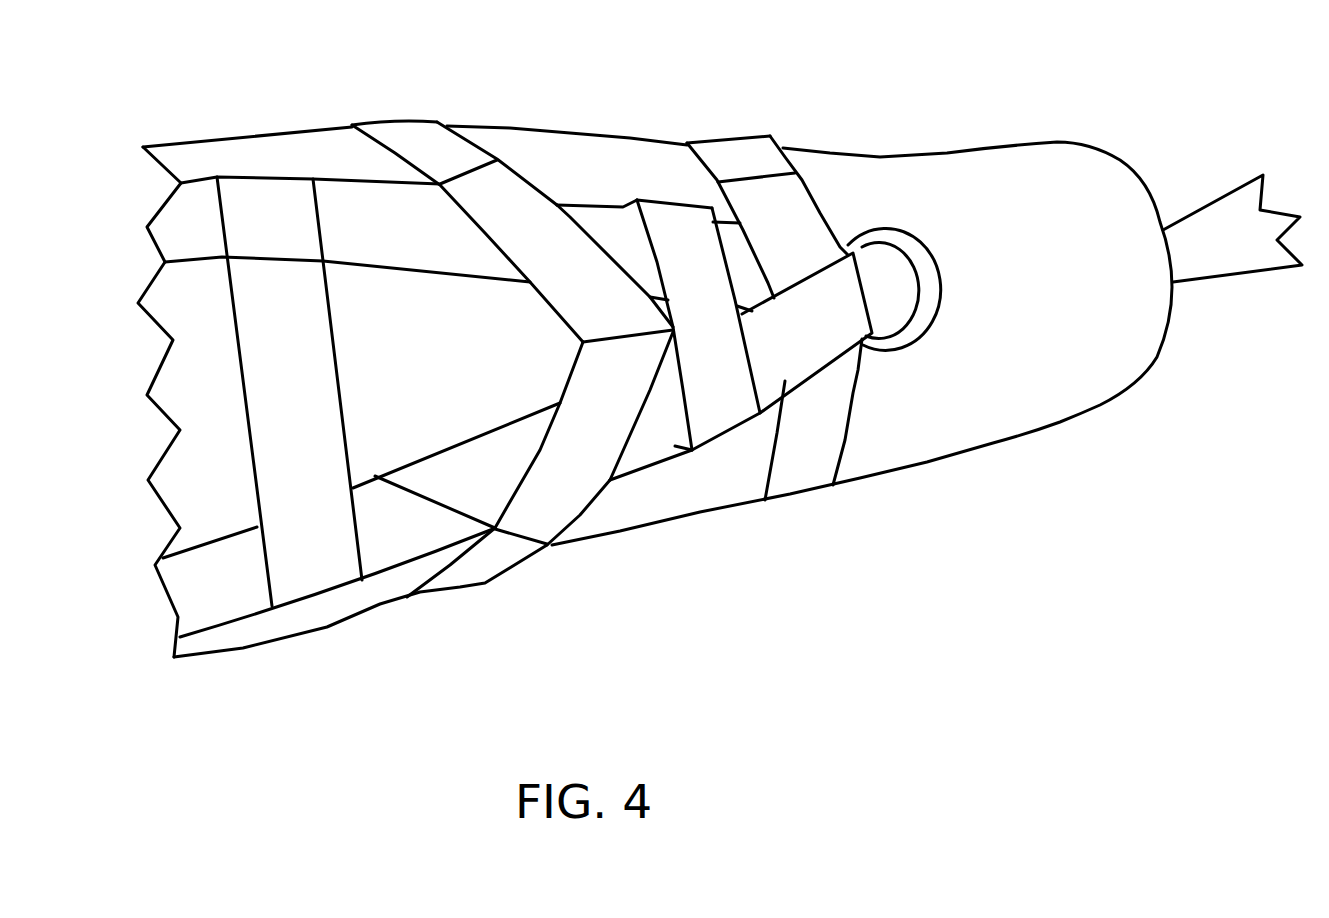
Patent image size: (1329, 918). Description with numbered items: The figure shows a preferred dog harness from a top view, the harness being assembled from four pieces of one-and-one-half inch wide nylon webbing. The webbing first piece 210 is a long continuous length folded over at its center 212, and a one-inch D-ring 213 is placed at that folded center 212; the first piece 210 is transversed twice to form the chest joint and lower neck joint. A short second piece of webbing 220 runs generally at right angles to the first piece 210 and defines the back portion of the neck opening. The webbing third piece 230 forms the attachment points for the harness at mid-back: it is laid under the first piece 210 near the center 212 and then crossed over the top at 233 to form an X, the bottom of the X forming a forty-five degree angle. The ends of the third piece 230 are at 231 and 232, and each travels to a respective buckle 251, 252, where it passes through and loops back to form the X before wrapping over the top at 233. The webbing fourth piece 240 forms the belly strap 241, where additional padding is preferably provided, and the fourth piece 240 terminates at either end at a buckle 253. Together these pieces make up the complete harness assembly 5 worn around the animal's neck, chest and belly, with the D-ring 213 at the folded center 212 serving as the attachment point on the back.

The harness assembly on body 5 is at (975, 144).
The webbing first piece 210 is at (229, 631).
The folded center 212 is at (872, 250).
The D-ring 213 is at (913, 250).
The second piece of webbing 220 is at (315, 365).
The webbing third piece 230 is at (546, 307).
The end of webbing third piece 231 is at (637, 347).
The end of webbing third piece 232 is at (612, 315).
The crossover of webbing third piece 233 is at (743, 407).
The webbing fourth piece 240 is at (857, 398).
The belly strap 241 is at (840, 424).
The buckle 251 is at (493, 568).
The buckle 252 is at (403, 138).
The buckle 253 is at (745, 145).